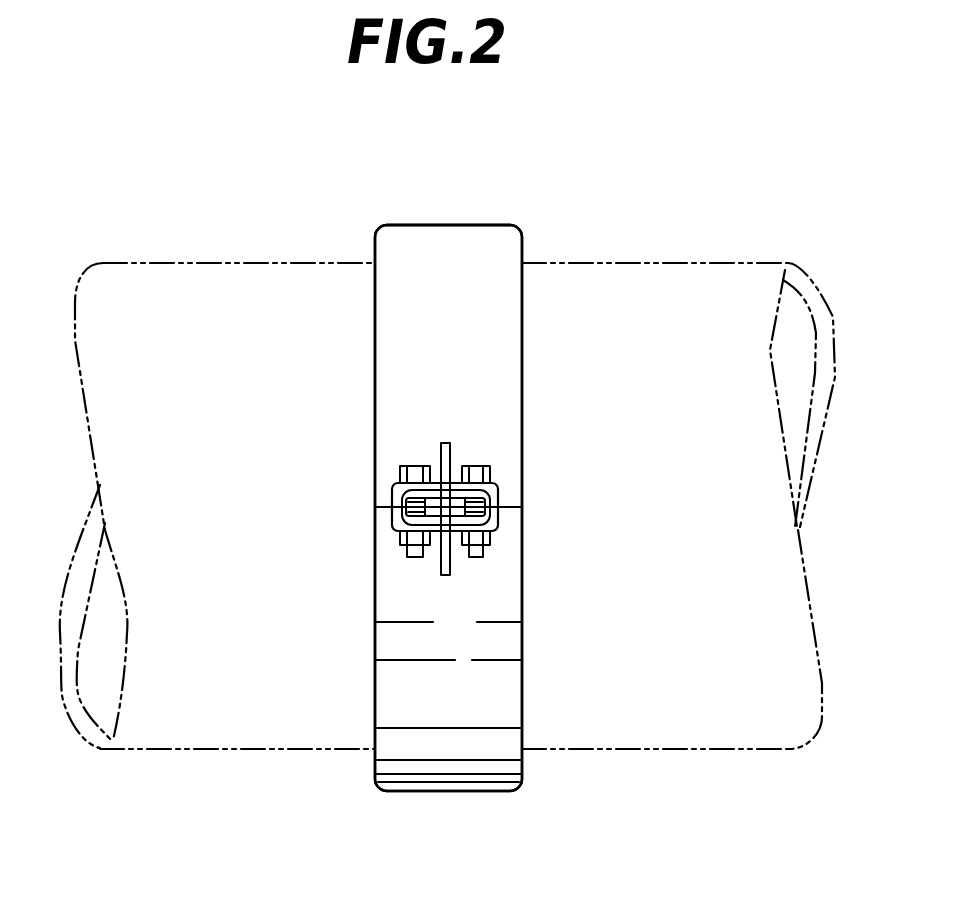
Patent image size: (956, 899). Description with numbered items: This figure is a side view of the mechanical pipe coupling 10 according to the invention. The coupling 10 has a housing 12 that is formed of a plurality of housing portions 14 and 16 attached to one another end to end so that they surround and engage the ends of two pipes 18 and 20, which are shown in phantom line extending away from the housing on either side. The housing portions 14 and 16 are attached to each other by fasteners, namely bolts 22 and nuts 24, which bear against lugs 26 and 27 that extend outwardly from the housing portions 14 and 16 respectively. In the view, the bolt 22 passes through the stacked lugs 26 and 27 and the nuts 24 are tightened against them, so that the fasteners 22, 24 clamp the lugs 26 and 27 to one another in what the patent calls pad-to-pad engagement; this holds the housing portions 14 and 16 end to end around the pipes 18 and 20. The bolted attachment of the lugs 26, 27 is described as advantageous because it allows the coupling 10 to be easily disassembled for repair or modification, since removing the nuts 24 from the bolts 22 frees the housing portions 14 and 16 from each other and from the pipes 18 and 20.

The mechanical pipe coupling 10 is at (517, 174).
The housing 12 is at (413, 226).
The housing portion 14 is at (517, 233).
The housing portion 16 is at (423, 772).
The pipe 18 is at (197, 735).
The pipe 20 is at (708, 732).
The bolt 22 is at (478, 465).
The nut 24 is at (488, 536).
The lug 26 is at (497, 485).
The lug 27 is at (394, 525).